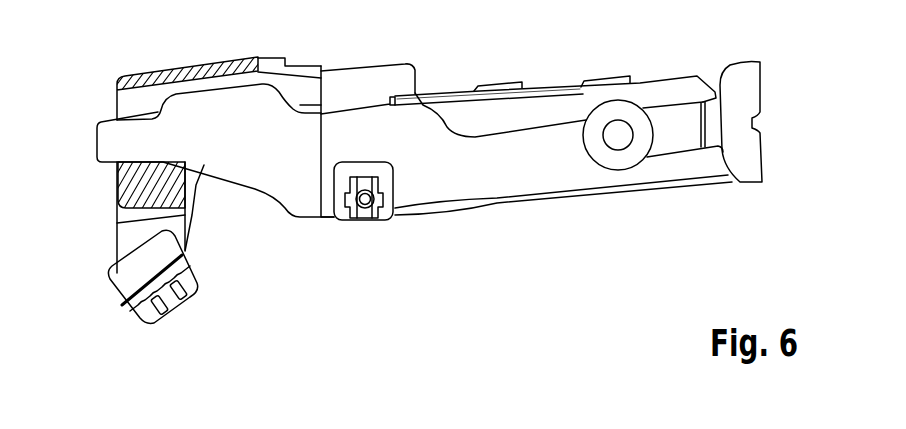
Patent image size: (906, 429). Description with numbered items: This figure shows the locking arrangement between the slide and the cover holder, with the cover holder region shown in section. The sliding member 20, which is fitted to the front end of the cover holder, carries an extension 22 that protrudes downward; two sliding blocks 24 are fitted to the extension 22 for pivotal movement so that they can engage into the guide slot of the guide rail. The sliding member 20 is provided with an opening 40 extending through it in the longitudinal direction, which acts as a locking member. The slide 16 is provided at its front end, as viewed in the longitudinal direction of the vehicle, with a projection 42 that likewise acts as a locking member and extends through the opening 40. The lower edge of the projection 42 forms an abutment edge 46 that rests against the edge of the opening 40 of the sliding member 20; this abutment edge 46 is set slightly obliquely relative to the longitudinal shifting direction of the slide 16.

The slide 16 is at (551, 183).
The sliding member 20 is at (128, 181).
The extension 22 is at (130, 240).
The sliding blocks 24 is at (113, 289).
The opening 40 is at (130, 102).
The projection 42 is at (112, 133).
The abutment edge 46 is at (164, 163).